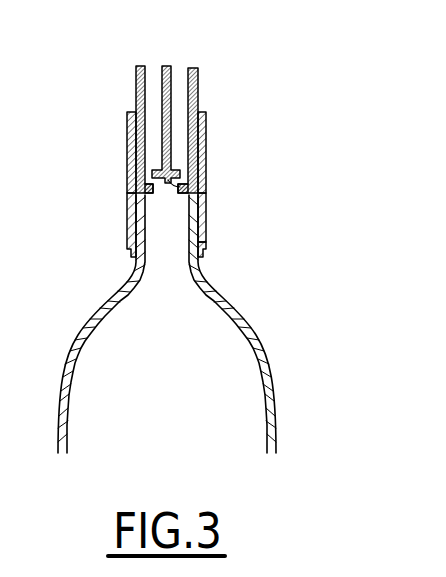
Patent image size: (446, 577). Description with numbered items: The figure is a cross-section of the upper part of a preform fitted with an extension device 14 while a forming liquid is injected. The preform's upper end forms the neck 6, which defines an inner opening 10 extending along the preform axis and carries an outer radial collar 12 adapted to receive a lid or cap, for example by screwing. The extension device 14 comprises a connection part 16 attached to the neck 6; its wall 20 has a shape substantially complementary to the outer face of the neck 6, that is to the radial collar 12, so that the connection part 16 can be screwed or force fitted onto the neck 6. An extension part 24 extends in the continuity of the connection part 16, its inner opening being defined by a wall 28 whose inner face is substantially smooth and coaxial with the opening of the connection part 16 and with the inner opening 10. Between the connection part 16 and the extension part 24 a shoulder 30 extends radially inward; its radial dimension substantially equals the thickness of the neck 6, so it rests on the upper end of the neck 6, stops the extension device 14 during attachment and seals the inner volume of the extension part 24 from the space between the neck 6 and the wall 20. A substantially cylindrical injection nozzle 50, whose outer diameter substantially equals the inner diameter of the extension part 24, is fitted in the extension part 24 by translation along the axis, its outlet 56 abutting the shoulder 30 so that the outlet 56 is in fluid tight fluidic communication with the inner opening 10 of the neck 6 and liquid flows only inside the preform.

The neck 6 is at (192, 244).
The inner opening 10 is at (167, 222).
The outer radial collar 12 is at (128, 227).
The extension device 14 is at (207, 135).
The connection part 16 is at (203, 218).
The wall 20 is at (200, 232).
The extension part 24 is at (142, 136).
The wall 28 is at (127, 153).
The shoulder 30 is at (128, 180).
The injection nozzle 50 is at (195, 70).
The outlet 56 is at (202, 177).